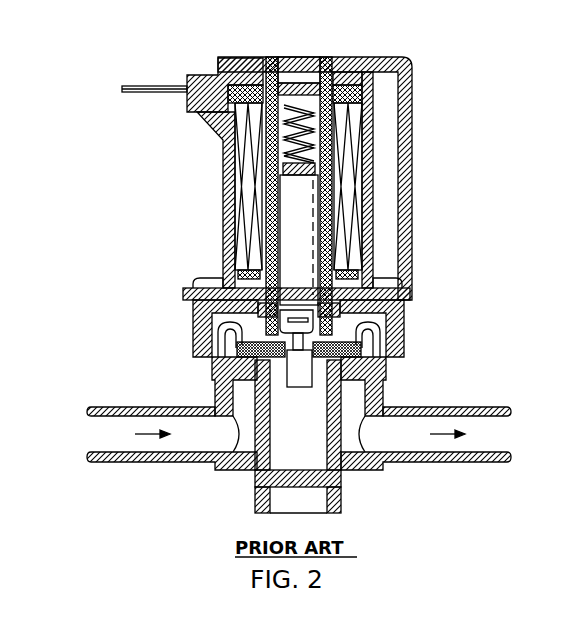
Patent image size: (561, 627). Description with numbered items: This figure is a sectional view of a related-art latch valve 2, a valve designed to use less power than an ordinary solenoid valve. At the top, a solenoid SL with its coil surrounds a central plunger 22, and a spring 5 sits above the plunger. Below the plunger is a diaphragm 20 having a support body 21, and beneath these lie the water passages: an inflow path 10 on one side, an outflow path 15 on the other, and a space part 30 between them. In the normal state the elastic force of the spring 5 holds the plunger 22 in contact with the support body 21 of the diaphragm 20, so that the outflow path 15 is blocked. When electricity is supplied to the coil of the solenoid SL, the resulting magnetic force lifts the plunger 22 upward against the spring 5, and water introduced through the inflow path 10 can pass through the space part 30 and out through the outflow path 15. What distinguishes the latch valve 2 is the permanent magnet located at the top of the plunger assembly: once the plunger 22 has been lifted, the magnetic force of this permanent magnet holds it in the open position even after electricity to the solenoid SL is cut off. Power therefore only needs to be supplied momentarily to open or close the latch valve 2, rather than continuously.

The latch valve 2 is at (35, 89).
The spring 5 is at (338, 117).
The solenoid SL is at (357, 160).
The plunger 22 is at (305, 237).
The space part 30 is at (240, 311).
The support body 21 is at (378, 324).
The diaphragm 20 is at (207, 378).
The inflow path 10 is at (87, 437).
The outflow path 15 is at (508, 437).